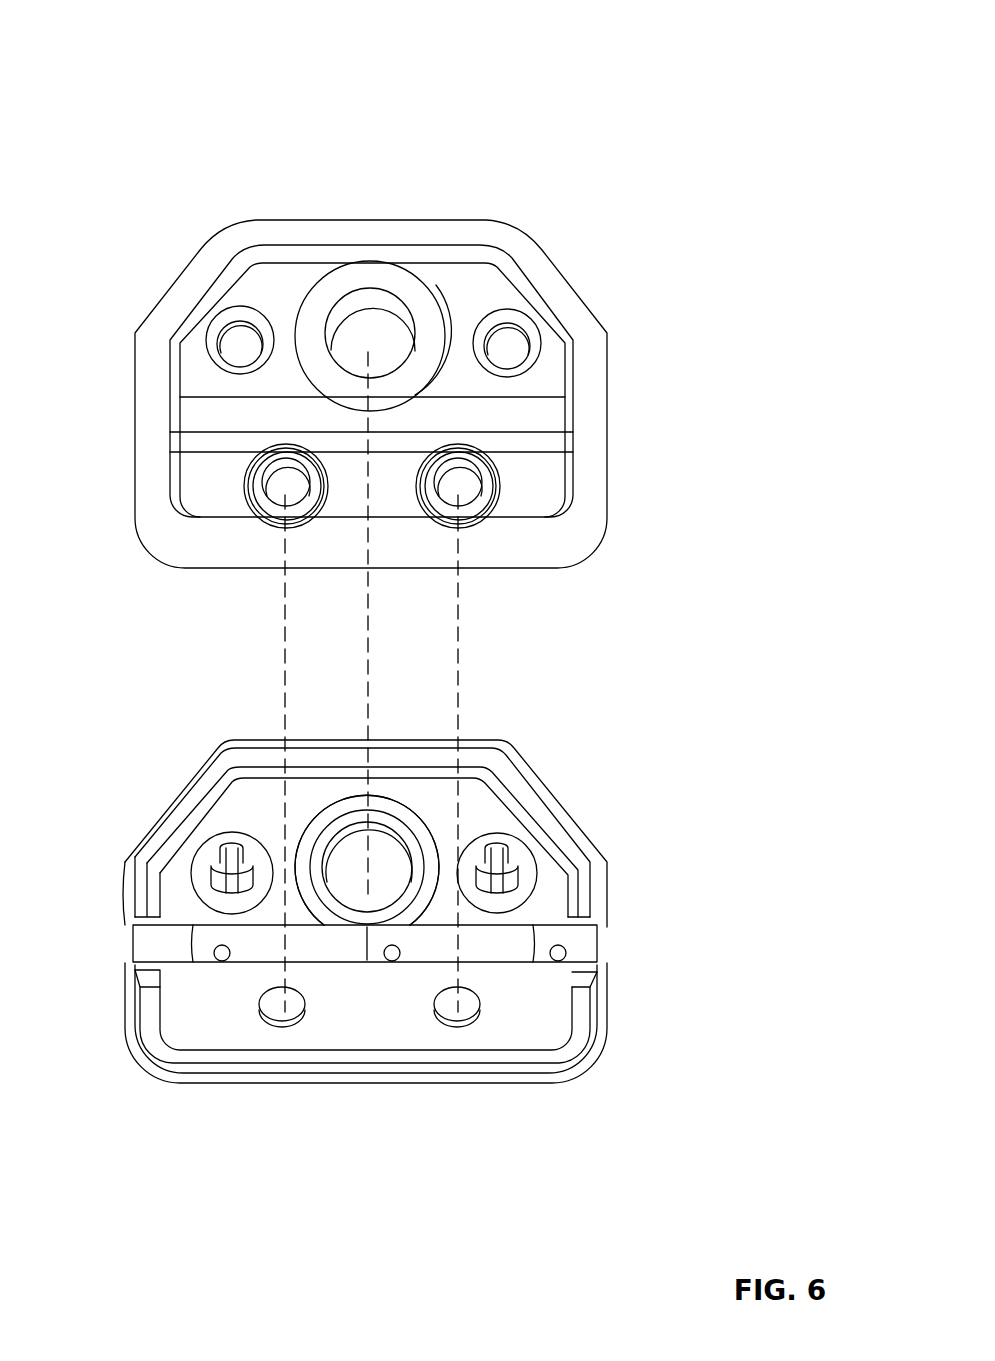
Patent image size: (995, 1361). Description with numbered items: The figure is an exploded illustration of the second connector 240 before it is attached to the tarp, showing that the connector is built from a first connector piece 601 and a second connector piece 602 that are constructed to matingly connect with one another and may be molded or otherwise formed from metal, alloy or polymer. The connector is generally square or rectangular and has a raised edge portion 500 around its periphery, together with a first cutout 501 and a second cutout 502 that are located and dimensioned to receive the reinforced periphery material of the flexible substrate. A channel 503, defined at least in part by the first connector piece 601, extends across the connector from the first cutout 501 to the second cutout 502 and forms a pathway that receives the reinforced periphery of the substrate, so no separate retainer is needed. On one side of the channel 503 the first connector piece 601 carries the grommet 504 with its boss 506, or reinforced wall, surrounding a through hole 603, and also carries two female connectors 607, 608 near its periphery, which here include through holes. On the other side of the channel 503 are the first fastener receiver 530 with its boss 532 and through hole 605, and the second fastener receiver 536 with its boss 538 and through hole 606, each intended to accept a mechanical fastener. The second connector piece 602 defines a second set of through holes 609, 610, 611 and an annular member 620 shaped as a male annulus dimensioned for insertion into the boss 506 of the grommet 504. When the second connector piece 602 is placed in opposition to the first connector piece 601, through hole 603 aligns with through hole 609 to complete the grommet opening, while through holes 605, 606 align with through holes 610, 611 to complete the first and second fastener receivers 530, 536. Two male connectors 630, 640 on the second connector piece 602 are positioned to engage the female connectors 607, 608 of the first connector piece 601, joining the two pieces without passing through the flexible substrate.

The second connector 240 is at (693, 51).
The first connector piece 601 is at (556, 109).
The second connector piece 602 is at (620, 706).
The raised edge portion 500 is at (585, 332).
The first cutout 501 is at (610, 414).
The second cutout 502 is at (124, 422).
The channel 503 is at (190, 413).
The grommet 504 is at (352, 251).
The boss 506 is at (385, 284).
The through hole 603 is at (398, 340).
The female connector 607 is at (240, 352).
The female connector 608 is at (507, 345).
The first fastener receiver 530 is at (237, 512).
The boss 532 is at (293, 490).
The through hole 605 is at (293, 490).
The second fastener receiver 536 is at (433, 535).
The boss 538 is at (462, 491).
The through hole 606 is at (462, 491).
The annular member 620 is at (333, 834).
The through hole 609 is at (375, 856).
The male connector 630 is at (200, 853).
The male connector 640 is at (523, 843).
The through hole 610 is at (275, 1017).
The through hole 611 is at (457, 1017).